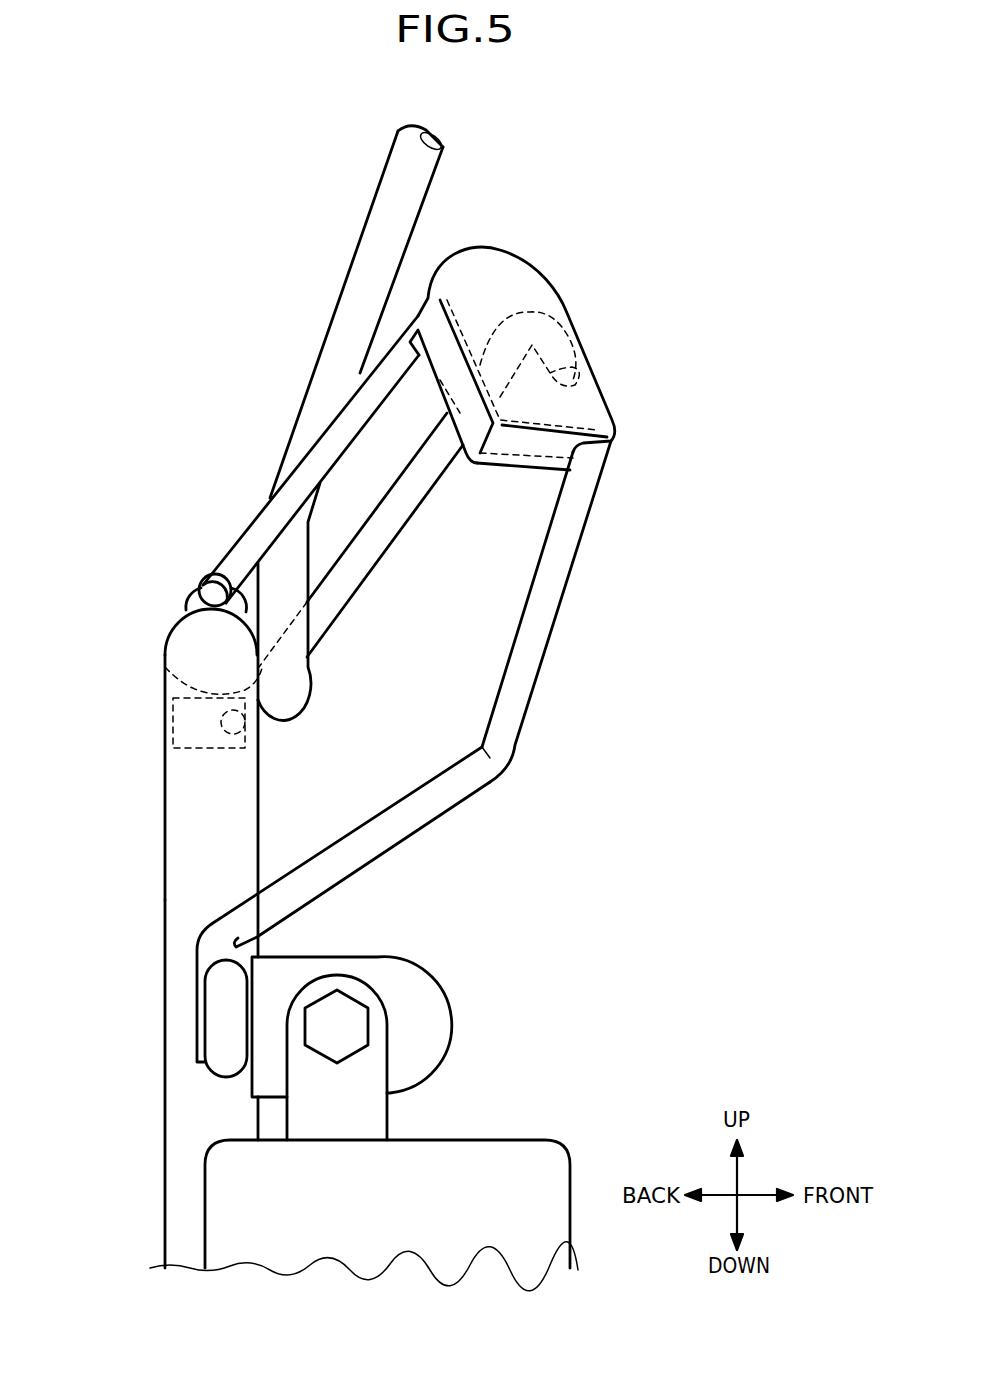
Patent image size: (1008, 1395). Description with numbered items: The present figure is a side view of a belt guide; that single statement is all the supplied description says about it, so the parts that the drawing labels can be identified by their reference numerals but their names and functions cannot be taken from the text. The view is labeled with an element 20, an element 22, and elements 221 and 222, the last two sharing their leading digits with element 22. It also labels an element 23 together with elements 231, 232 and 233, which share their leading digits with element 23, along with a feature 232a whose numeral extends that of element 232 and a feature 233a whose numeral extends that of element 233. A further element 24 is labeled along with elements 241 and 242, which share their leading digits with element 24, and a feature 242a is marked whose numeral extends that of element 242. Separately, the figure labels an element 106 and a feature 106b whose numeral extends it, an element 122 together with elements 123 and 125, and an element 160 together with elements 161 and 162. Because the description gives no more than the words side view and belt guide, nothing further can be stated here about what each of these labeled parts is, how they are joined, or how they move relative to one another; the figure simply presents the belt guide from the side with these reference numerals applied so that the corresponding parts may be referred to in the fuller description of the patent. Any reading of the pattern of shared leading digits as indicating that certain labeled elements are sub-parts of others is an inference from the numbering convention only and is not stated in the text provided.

The operation device 20 is at (645, 257).
The housing 22 is at (597, 110).
The housing body 221 is at (502, 280).
The housing bracket 222 is at (417, 313).
The link mechanism 23 is at (110, 395).
The first link bar 231 is at (445, 363).
The second link arm 232 is at (298, 477).
The ball joint 232a is at (210, 594).
The third link arm 233 is at (467, 772).
The stopper 233a is at (193, 1003).
The lever unit 24 is at (684, 370).
The cam 241 is at (567, 347).
The lever arm 242 is at (445, 463).
The lever pin 242a is at (243, 730).
The handle 106 is at (228, 157).
The handle tube 106b is at (337, 333).
The support column 122 is at (106, 708).
The upper column portion 123 is at (180, 682).
The lower column portion 125 is at (165, 763).
The base unit 160 is at (563, 1062).
The bracket 161 is at (437, 1010).
The base 162 is at (518, 1138).